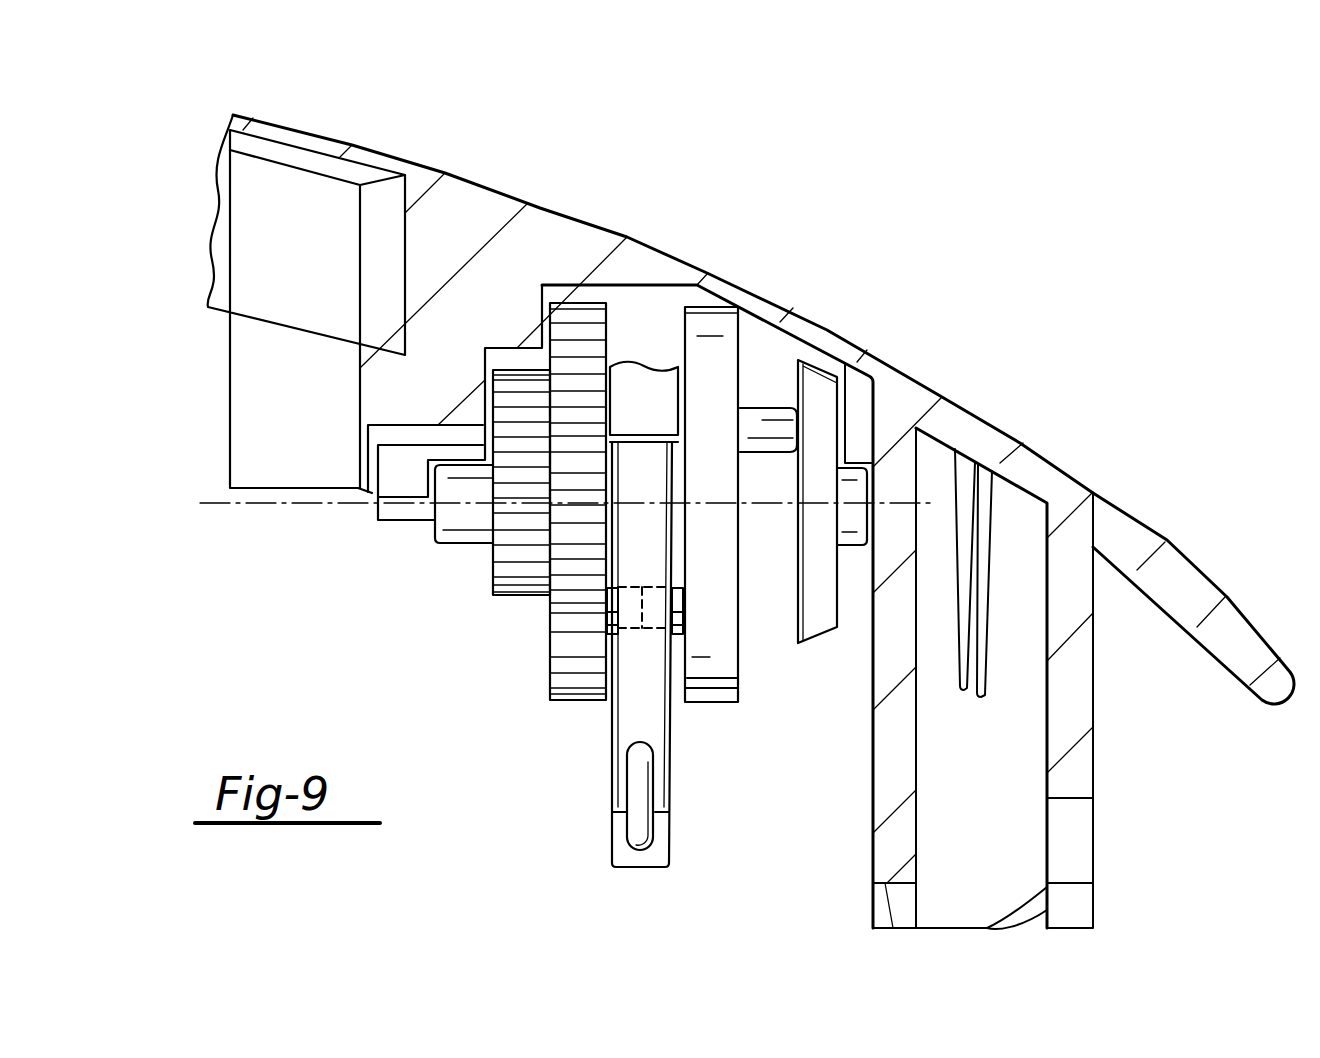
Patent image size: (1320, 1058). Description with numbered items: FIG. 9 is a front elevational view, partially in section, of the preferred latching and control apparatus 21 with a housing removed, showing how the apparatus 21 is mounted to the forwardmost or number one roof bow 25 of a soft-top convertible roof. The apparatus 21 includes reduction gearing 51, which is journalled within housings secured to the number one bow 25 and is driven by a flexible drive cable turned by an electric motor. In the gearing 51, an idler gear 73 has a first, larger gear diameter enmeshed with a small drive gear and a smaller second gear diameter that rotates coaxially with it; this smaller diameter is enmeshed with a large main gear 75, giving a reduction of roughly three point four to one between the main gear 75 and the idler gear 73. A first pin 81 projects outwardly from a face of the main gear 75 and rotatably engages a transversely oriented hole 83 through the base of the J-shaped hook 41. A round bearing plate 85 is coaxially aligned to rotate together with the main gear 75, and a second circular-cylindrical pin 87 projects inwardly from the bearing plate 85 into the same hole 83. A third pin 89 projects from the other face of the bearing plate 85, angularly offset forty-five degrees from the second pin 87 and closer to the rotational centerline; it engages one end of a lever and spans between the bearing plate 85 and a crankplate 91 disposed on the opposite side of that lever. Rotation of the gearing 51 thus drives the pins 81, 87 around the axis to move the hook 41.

The latching and control apparatus 21 is at (975, 320).
The number one roof bow 25 is at (295, 138).
The hook 41 is at (610, 757).
The reduction gearing 51 is at (636, 318).
The idler gear 73 is at (500, 571).
The main gear 75 is at (578, 702).
The first pin 81 is at (606, 612).
The hole 83 is at (652, 607).
The bearing plate 85 is at (710, 678).
The second pin 87 is at (682, 615).
The third pin 89 is at (773, 420).
The crankplate 91 is at (820, 450).